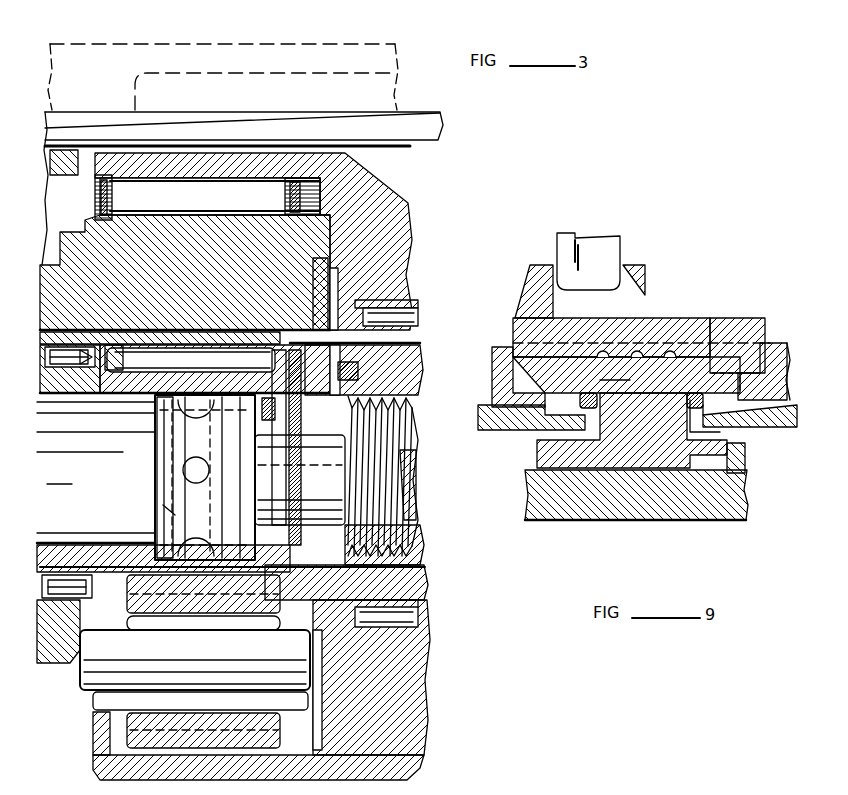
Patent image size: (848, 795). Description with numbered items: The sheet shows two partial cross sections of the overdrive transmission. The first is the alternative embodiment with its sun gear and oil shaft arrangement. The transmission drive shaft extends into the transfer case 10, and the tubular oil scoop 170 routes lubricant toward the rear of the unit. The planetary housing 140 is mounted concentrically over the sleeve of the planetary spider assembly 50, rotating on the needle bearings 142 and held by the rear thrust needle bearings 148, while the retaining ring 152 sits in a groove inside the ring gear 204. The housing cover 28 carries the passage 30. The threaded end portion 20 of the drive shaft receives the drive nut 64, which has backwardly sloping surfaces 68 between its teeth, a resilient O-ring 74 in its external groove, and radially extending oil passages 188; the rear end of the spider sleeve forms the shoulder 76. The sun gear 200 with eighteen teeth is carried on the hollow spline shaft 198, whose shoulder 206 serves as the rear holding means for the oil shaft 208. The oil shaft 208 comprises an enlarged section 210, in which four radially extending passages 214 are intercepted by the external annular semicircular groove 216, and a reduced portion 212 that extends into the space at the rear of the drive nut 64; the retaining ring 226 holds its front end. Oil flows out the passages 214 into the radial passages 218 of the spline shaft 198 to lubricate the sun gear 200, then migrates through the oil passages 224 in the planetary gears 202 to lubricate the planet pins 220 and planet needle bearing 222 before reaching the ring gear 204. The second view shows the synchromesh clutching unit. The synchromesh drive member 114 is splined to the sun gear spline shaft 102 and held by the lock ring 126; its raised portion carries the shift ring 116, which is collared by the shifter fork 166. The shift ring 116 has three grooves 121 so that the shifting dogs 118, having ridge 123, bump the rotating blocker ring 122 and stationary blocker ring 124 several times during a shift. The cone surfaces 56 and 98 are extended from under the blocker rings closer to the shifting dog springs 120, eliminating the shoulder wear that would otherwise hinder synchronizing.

In FIG. 3, the transfer case 10 is at (292, 42).
In FIG. 3, the tubular oil scoop 170 is at (336, 112).
In FIG. 3, the planetary housing 140 is at (402, 170).
In FIG. 3, the retaining ring 152 is at (98, 200).
In FIG. 3, the ring gear 204 is at (140, 196).
In FIG. 3, the planetary spider assembly 50 is at (38, 301).
In FIG. 3, the rear thrust needle bearings 148 is at (350, 282).
In FIG. 3, the needle bearings 142 is at (416, 313).
In FIG. 3, the passage 30 is at (50, 352).
In FIG. 3, the housing cover 28 is at (100, 348).
In FIG. 3, the sun gear 200 is at (135, 355).
In FIG. 3, the spline shaft 198 is at (62, 474).
In FIG. 3, the oil shaft 208 is at (155, 473).
In FIG. 3, the external annular semicircular groove 216 is at (157, 426).
In FIG. 3, the radially extending passages 214 is at (165, 437).
In FIG. 3, the enlarged section 210 is at (162, 511).
In FIG. 3, the shoulder 206 is at (157, 547).
In FIG. 3, the radial passages 218 is at (184, 364).
In FIG. 3, the shoulder 76 is at (268, 348).
In FIG. 3, the retaining ring 226 is at (268, 410).
In FIG. 3, the reduced portion 212 is at (286, 432).
In FIG. 3, the backwardly sloping surface 68 is at (320, 421).
In FIG. 3, the radially extending oil passages 188 is at (362, 378).
In FIG. 3, the threaded end portion 20 is at (395, 470).
In FIG. 3, the drive nut 64 is at (430, 544).
In FIG. 3, the resilient O-ring 74 is at (400, 581).
In FIG. 3, the oil passages 224 is at (202, 600).
In FIG. 3, the planet pins 220 is at (82, 690).
In FIG. 3, the planet needle bearing 222 is at (130, 706).
In FIG. 3, the planetary gears 202 is at (143, 722).
In FIG. 9, the shifter fork 166 is at (602, 252).
In FIG. 9, the shift ring 116 is at (648, 282).
In FIG. 9, the grooves 121 is at (607, 340).
In FIG. 9, the ridge 123 is at (640, 358).
In FIG. 9, the shifting dogs 118 is at (723, 353).
In FIG. 9, the rotating blocker ring 122 is at (785, 343).
In FIG. 9, the cone surface 56 is at (792, 400).
In FIG. 9, the stationary blocker ring 124 is at (493, 377).
In FIG. 9, the cone surface 98 is at (493, 430).
In FIG. 9, the synchromesh drive member 114 is at (547, 457).
In FIG. 9, the lock ring 126 is at (750, 465).
In FIG. 9, the shifting dog springs 120 is at (740, 433).
In FIG. 9, the sun gear spline shaft 102 is at (693, 507).